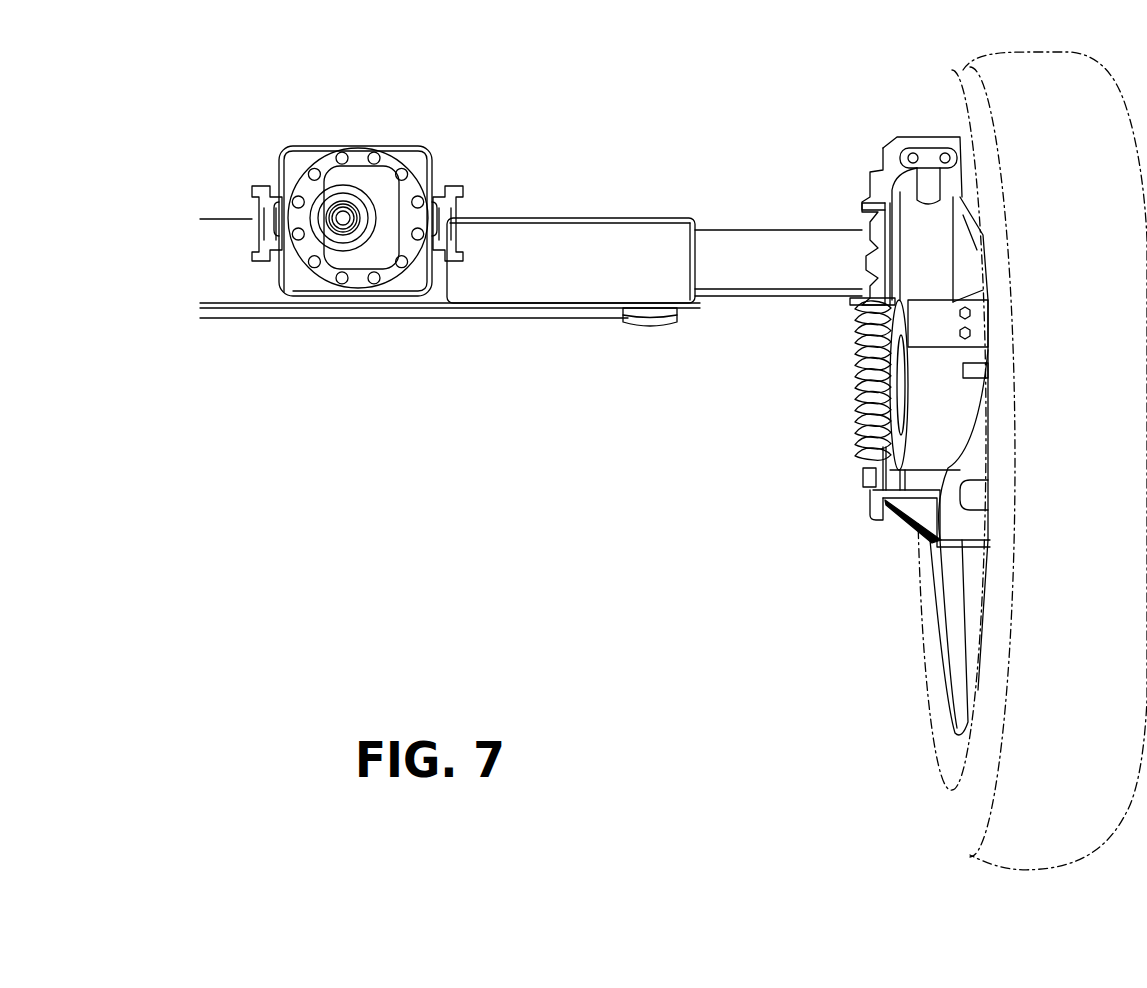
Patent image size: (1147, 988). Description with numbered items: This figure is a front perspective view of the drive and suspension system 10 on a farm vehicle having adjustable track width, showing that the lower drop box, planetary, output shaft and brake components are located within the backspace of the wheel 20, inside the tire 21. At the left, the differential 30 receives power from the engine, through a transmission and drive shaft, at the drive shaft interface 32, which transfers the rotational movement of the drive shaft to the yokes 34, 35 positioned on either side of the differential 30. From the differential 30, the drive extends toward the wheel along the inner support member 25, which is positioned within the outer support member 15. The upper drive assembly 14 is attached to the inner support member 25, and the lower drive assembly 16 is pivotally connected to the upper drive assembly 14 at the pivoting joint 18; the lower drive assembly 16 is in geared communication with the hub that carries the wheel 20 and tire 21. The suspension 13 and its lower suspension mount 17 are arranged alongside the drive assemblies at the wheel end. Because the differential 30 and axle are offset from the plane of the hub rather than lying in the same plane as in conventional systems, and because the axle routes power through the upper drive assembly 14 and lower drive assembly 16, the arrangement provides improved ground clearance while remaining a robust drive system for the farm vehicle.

The drive and suspension system 10 is at (662, 585).
The suspension 13 is at (852, 330).
The upper drive assembly 14 is at (923, 220).
The outer support member 15 is at (620, 237).
The lower drive assembly 16 is at (970, 523).
The lower suspension mount 17 is at (878, 510).
The pivoting joint 18 is at (890, 387).
The wheel 20 is at (957, 670).
The tire 21 is at (953, 762).
The inner support member 25 is at (750, 240).
The differential 30 is at (298, 268).
The drive shaft interface 32 is at (347, 218).
The yoke 34 is at (252, 248).
The yoke 35 is at (457, 248).